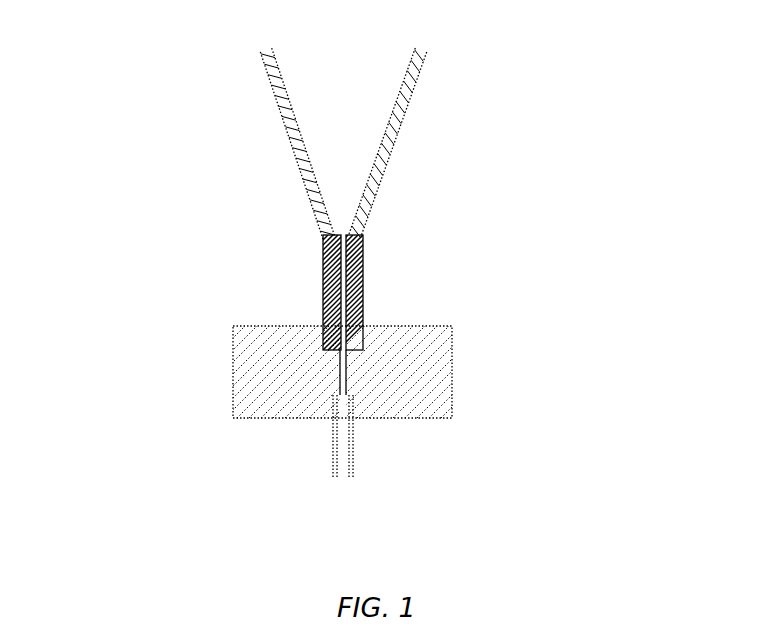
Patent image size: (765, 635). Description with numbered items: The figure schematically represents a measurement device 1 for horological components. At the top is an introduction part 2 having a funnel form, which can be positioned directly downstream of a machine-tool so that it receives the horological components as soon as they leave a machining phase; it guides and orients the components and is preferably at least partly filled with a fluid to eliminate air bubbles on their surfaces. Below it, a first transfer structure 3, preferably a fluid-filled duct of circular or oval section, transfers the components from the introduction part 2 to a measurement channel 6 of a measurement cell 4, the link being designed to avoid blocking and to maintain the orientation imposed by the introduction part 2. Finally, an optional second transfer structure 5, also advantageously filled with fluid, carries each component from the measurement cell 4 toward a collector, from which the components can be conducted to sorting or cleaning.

The measurement device 1 is at (182, 171).
The introduction part 2 is at (372, 113).
The first transfer structure 3 is at (363, 284).
The measurement cell 4 is at (405, 373).
The second transfer structure 5 is at (345, 448).
The measurement channel 6 is at (340, 373).